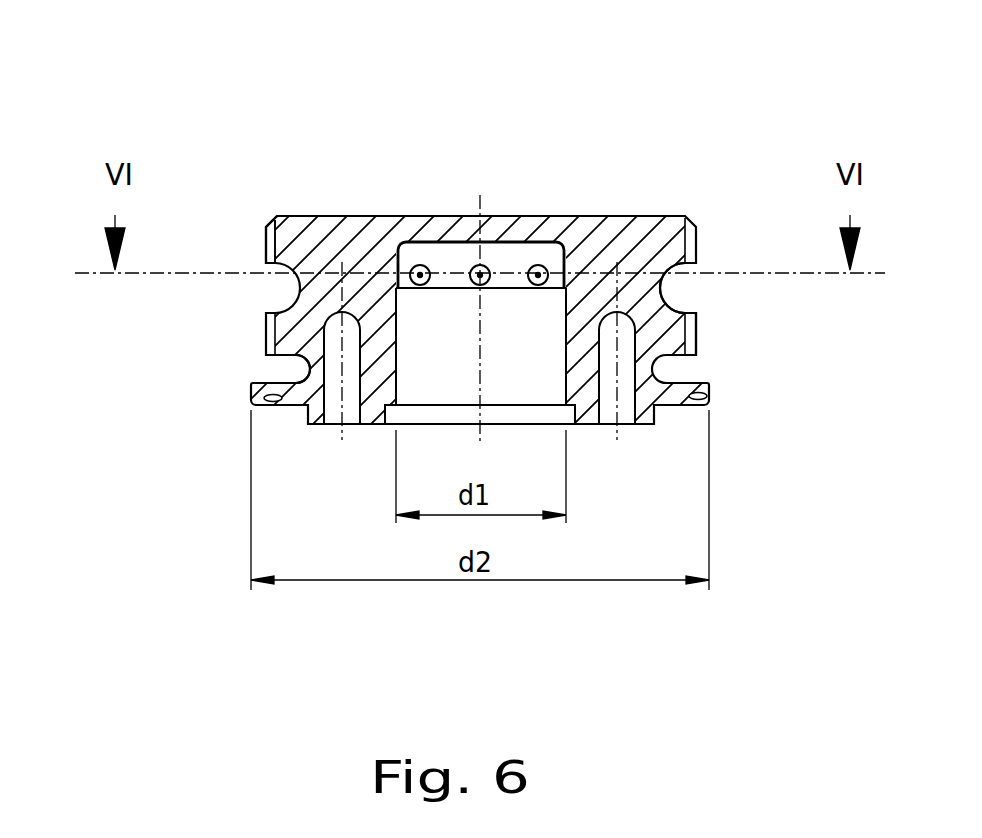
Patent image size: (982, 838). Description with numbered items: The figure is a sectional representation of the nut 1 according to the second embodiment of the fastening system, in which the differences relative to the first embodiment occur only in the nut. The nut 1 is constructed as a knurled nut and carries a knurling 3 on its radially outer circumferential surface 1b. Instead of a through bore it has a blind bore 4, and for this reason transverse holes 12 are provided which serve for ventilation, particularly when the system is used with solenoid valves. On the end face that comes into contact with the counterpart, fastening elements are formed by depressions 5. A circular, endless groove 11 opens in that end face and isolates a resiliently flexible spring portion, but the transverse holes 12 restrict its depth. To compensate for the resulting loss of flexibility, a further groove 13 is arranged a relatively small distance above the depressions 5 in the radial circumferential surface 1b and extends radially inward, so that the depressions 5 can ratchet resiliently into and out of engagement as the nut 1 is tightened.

The nut 1 is at (781, 480).
The radial circumferential surface 1b is at (717, 313).
The knurling 3 is at (272, 232).
The blind bore 4 is at (420, 365).
The depressions 5 is at (292, 424).
The groove 11 is at (614, 373).
The transverse holes 12 is at (418, 268).
The further groove 13 is at (292, 371).